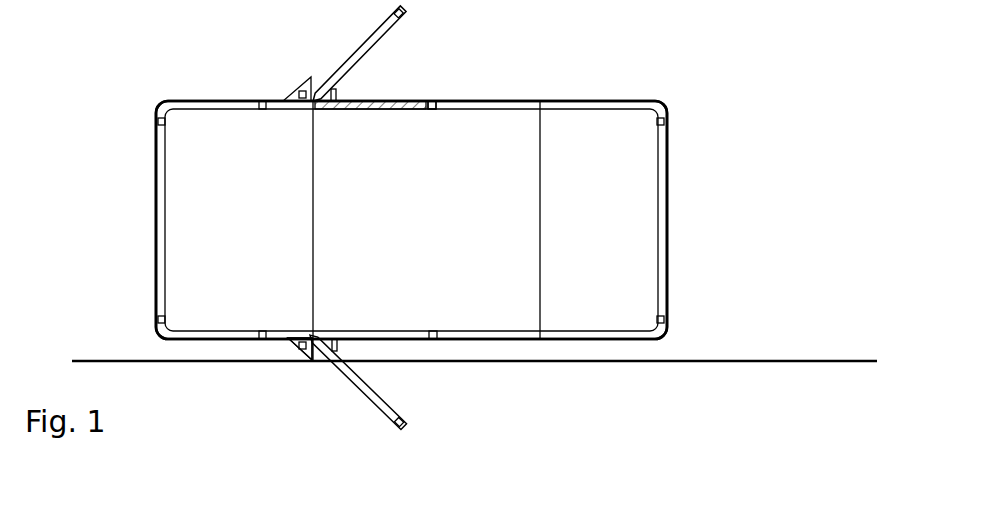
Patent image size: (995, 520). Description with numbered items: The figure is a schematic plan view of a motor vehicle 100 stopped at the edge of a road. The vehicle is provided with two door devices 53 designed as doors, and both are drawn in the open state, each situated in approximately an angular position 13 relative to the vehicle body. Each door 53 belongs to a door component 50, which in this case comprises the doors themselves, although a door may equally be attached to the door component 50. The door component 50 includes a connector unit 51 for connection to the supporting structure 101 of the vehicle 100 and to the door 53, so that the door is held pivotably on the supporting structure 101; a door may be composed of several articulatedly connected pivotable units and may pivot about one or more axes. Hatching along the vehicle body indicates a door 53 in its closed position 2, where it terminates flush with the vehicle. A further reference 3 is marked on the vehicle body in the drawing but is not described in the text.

The motor vehicle 100 is at (130, 80).
The housing 3 is at (508, 42).
The angular position 13 is at (405, 101).
The closed position 2 is at (435, 115).
The door device 53 is at (356, 50).
The door component 50 is at (346, 128).
The connector unit 51 is at (322, 342).
The supporting structure 101 is at (382, 342).